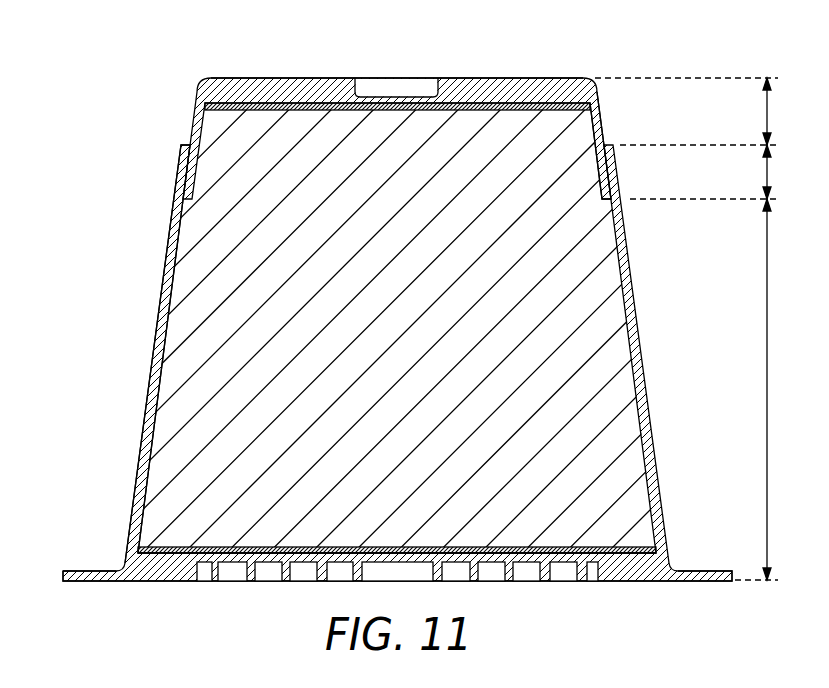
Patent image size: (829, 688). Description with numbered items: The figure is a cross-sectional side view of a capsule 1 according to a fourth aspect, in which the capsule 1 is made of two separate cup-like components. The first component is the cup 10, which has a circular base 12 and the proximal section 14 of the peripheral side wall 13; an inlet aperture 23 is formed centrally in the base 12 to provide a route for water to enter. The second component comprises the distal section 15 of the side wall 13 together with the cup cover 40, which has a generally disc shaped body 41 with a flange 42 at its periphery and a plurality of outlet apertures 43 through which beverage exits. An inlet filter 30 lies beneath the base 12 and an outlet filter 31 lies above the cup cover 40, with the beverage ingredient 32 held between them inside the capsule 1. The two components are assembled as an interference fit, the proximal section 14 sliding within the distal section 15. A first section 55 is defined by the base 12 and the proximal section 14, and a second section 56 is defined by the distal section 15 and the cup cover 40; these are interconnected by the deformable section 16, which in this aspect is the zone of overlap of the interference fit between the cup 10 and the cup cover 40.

The capsule 1 is at (414, 331).
The cup 10 is at (390, 110).
The base 12 is at (517, 78).
The inlet aperture 23 is at (393, 73).
The inlet filter 30 is at (258, 103).
The proximal section 14 is at (602, 127).
The peripheral side wall 13 is at (375, 393).
The distal section 15 is at (152, 333).
The beverage ingredient 32 is at (608, 390).
The outlet filter 31 is at (620, 553).
The flange 42 is at (63, 576).
The body 41 is at (166, 574).
The cup cover 40 is at (397, 601).
The outlet apertures 43 is at (538, 580).
The first section 55 is at (698, 111).
The deformable section 16 is at (716, 172).
The second section 56 is at (768, 389).